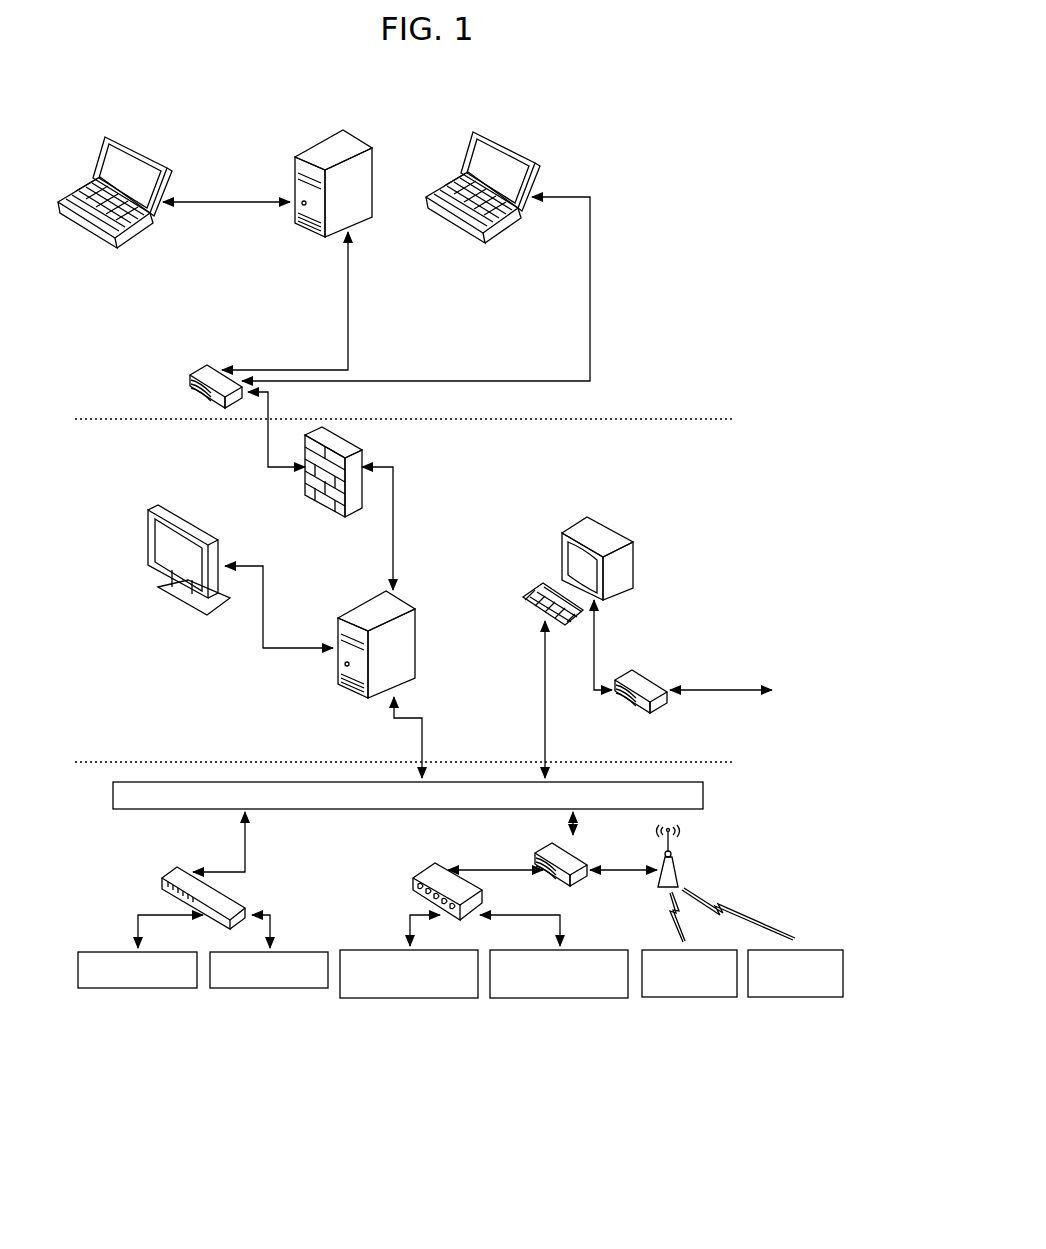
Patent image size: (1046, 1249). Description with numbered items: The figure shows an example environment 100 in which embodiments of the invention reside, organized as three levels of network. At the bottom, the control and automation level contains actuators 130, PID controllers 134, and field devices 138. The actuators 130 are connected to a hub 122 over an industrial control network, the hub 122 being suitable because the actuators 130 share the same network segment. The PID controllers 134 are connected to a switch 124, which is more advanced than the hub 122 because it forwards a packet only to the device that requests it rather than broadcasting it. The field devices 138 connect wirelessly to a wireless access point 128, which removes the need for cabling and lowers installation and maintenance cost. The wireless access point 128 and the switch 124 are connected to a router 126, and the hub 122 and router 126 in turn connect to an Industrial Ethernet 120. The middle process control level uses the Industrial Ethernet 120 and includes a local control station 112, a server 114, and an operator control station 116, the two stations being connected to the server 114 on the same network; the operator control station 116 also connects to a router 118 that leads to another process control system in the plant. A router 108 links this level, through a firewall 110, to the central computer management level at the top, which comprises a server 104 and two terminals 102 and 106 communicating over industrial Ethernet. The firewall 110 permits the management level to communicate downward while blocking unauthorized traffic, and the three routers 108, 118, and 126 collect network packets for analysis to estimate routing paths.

The environment 100 is at (632, 114).
The terminal 102 is at (140, 151).
The server 104 is at (358, 134).
The terminal 106 is at (513, 150).
The router 108 is at (203, 370).
The firewall 110 is at (353, 437).
The local control station 112 is at (203, 528).
The server 114 is at (410, 600).
The operator control station 116 is at (607, 527).
The router 118 is at (655, 675).
The Industrial Ethernet 120 is at (705, 792).
The hub 122 is at (170, 868).
The switch 124 is at (417, 868).
The router 126 is at (547, 838).
The wireless access point 128 is at (675, 860).
The actuators 130 is at (250, 990).
The PID controllers 134 is at (443, 998).
The field devices 138 is at (777, 997).